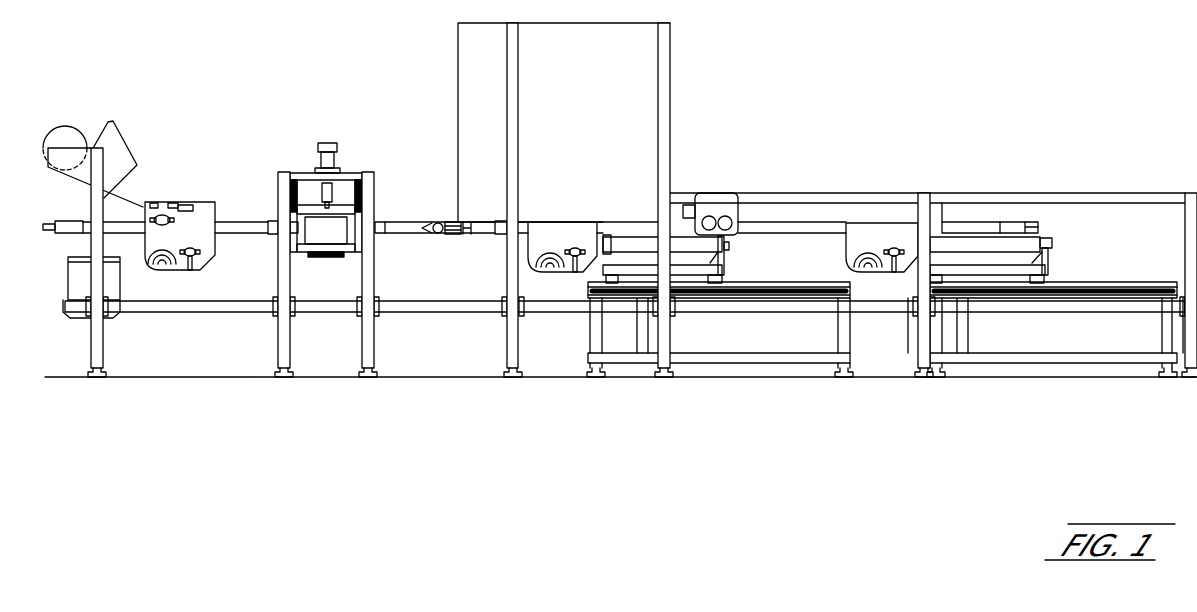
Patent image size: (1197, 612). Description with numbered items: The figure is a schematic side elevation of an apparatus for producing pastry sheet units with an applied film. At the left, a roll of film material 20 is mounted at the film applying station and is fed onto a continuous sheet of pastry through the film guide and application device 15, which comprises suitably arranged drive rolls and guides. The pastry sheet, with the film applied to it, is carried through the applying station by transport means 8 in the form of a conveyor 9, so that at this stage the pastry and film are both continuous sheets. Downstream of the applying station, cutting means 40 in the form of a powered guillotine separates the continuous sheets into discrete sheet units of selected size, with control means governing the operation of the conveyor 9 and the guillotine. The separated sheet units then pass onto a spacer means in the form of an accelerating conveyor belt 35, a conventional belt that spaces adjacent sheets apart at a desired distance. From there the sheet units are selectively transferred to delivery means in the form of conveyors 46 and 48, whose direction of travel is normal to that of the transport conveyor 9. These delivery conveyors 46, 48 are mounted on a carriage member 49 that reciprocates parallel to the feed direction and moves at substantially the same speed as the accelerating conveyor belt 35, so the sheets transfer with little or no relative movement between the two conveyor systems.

The transport means 8 is at (235, 237).
The conveyor 9 is at (233, 220).
The film guide and application device 15 is at (185, 206).
The roll of film material 20 is at (76, 128).
The accelerating conveyor belt 35 is at (494, 232).
The cutting means 40 is at (340, 160).
The delivery conveyor 46 is at (728, 262).
The delivery conveyor 48 is at (1049, 263).
The carriage member 49 is at (722, 267).